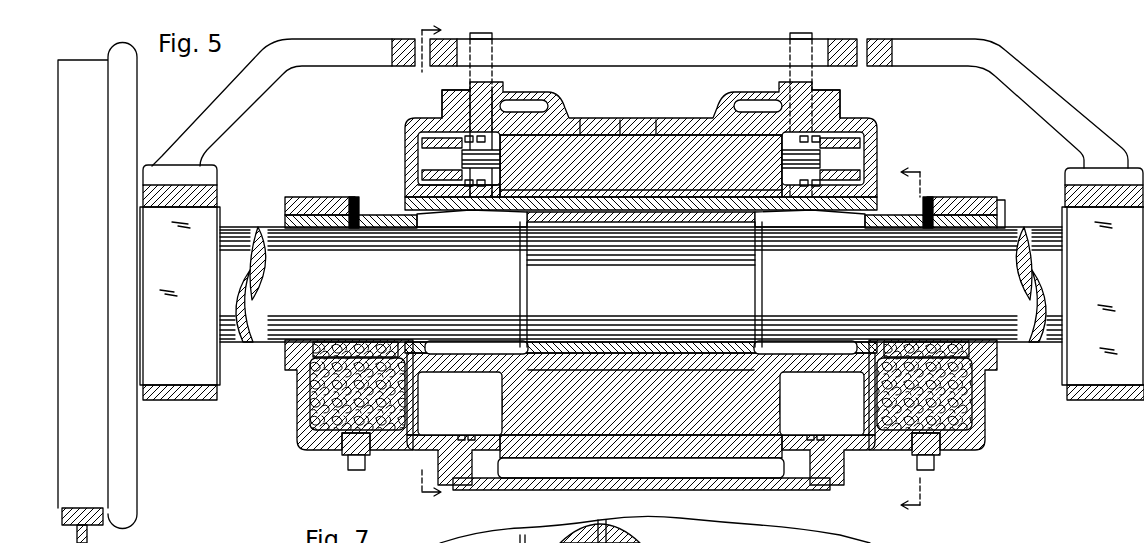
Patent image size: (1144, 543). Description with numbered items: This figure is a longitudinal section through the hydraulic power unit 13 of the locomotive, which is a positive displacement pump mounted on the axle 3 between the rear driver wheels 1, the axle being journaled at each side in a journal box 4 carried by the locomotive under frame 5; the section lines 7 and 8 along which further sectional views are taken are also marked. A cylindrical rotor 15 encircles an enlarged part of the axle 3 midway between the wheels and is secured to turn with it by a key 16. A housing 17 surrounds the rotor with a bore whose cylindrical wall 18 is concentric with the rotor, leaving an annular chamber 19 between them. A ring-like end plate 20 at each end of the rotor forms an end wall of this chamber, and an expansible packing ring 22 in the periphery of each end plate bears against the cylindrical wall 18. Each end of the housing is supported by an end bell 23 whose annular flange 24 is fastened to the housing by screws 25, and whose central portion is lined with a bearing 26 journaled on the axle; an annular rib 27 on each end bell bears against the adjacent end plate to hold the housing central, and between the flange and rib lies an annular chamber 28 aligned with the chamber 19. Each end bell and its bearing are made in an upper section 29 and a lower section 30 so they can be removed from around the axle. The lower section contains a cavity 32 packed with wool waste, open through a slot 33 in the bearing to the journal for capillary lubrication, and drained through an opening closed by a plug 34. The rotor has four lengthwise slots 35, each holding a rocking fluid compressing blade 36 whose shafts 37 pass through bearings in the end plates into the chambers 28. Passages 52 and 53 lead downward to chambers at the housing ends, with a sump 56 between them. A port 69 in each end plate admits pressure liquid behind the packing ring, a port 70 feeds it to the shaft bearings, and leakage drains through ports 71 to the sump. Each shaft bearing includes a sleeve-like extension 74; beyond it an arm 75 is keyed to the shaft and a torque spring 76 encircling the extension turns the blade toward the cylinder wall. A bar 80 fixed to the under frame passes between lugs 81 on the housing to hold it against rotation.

The rear driver wheels 1 is at (76, 72).
The axle 3 is at (241, 232).
The journal box 4 is at (190, 214).
The locomotive under frame 5 is at (205, 192).
The track rails 7 is at (919, 340).
The section line 8 is at (421, 261).
The hydraulic power unit 13 is at (405, 120).
The cylindrical rotor 15 is at (612, 218).
The key 16 is at (560, 235).
The housing 17 is at (573, 120).
The cylindrical wall 18 is at (630, 122).
The annular chamber 19 is at (650, 130).
The end plate 20 is at (641, 281).
The packing ring 22 is at (482, 128).
The end bell 23 is at (328, 196).
The annular flange 24 is at (448, 95).
The screws 25 is at (415, 182).
The bearing 26 is at (400, 232).
The annular rib 27 is at (455, 218).
The annular chamber 28 is at (414, 132).
The upper section 29 is at (998, 205).
The lower section 30 is at (297, 426).
The cavity 32 is at (310, 404).
The slot 33 is at (297, 381).
The plug 34 is at (348, 463).
The slots 35 is at (654, 222).
The fluid compressing blade 36 is at (692, 200).
The shaft 37 is at (641, 277).
The passage 52 is at (535, 78).
The passage 53 is at (753, 78).
The sump 56 is at (555, 470).
The port 69 is at (772, 152).
The port 70 is at (641, 296).
The ports 71 is at (445, 478).
The sleeve-like extension 74 is at (780, 180).
The arm 75 is at (860, 183).
The torque spring 76 is at (465, 378).
The bar 80 is at (581, 45).
The lugs 81 is at (492, 36).